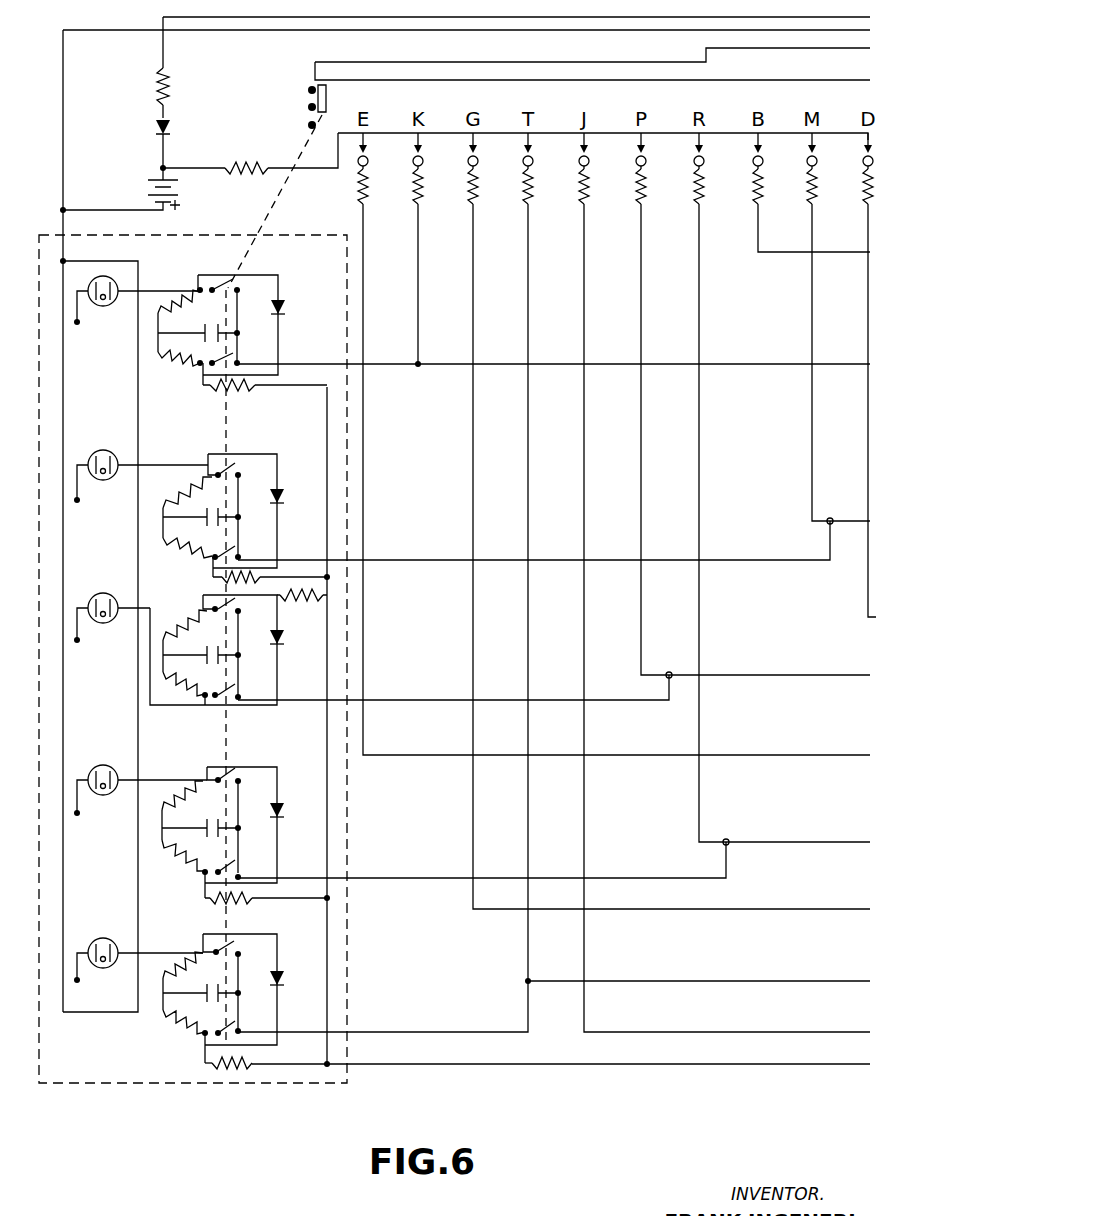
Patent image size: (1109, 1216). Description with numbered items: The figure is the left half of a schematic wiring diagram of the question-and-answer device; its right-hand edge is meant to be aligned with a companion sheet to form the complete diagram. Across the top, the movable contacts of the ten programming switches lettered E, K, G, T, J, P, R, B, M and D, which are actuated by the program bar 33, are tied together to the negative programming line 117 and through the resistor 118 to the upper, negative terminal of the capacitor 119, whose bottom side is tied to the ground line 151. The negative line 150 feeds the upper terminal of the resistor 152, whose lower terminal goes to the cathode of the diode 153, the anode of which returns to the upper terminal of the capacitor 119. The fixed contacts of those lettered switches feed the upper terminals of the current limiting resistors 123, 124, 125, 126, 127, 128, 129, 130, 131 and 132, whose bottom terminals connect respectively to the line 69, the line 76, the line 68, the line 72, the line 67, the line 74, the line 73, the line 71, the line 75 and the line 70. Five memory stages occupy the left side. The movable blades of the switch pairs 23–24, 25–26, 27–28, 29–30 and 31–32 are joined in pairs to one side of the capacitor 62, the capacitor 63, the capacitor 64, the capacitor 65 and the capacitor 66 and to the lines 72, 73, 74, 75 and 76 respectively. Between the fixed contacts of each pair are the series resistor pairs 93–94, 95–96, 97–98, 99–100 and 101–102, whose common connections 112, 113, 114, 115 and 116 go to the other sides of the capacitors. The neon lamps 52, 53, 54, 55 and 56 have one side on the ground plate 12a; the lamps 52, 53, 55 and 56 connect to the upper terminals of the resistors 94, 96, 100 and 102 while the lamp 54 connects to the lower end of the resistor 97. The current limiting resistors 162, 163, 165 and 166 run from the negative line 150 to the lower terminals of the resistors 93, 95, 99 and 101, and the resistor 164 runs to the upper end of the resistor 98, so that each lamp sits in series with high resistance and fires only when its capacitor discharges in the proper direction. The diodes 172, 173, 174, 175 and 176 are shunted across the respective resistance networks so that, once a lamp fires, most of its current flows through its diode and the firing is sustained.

The ground plate 12a is at (72, 710).
The switch 23 is at (237, 1032).
The switch 24 is at (240, 948).
The switch 25 is at (237, 875).
The switch 26 is at (236, 775).
The switch 27 is at (235, 696).
The switch 28 is at (236, 606).
The switch 29 is at (236, 556).
The switch 30 is at (232, 468).
The switch 31 is at (238, 358).
The switch 32 is at (240, 288).
The program bar 33 is at (780, 75).
The neon lamp 52 is at (110, 942).
The neon lamp 53 is at (110, 765).
The neon lamp 54 is at (108, 594).
The neon lamp 55 is at (108, 452).
The neon lamp 56 is at (106, 306).
The capacitor 62 is at (215, 988).
The capacitor 63 is at (207, 824).
The capacitor 64 is at (215, 650).
The capacitor 65 is at (230, 510).
The capacitor 66 is at (232, 334).
The line 67 is at (586, 465).
The line 68 is at (474, 465).
The line 69 is at (364, 470).
The line 70 is at (867, 464).
The line 71 is at (786, 252).
The line 72 is at (529, 465).
The line 73 is at (701, 465).
The line 74 is at (643, 465).
The line 75 is at (811, 462).
The line 76 is at (398, 365).
The resistor 93 is at (185, 1035).
The resistor 94 is at (186, 956).
The resistor 95 is at (190, 870).
The resistor 96 is at (188, 786).
The resistor 97 is at (188, 700).
The resistor 98 is at (180, 622).
The resistor 99 is at (195, 545).
The resistor 100 is at (182, 470).
The resistor 101 is at (196, 366).
The resistor 102 is at (180, 298).
The common connection 112 is at (163, 993).
The common connection 113 is at (162, 828).
The common connection 114 is at (163, 655).
The common connection 115 is at (163, 517).
The common connection 116 is at (158, 333).
The line 117 is at (552, 133).
The resistor 118 is at (250, 162).
The capacitor 119 is at (150, 188).
The current limiting resistor 123 is at (366, 204).
The current limiting resistor 124 is at (421, 204).
The current limiting resistor 125 is at (476, 204).
The current limiting resistor 126 is at (531, 204).
The current limiting resistor 127 is at (587, 204).
The current limiting resistor 128 is at (644, 204).
The current limiting resistor 129 is at (702, 204).
The current limiting resistor 130 is at (761, 204).
The current limiting resistor 131 is at (815, 204).
The current limiting resistor 132 is at (866, 180).
The negative line 150 is at (500, 30).
The ground line 151 is at (596, 32).
The resistor 152 is at (168, 100).
The diode 153 is at (170, 127).
The current limiting resistor 162 is at (222, 1075).
The current limiting resistor 163 is at (252, 904).
The current limiting resistor 164 is at (315, 605).
The current limiting resistor 165 is at (250, 577).
The current limiting resistor 166 is at (258, 392).
The diode 172 is at (286, 980).
The diode 173 is at (286, 810).
The diode 174 is at (286, 640).
The diode 175 is at (285, 500).
The diode 176 is at (286, 306).